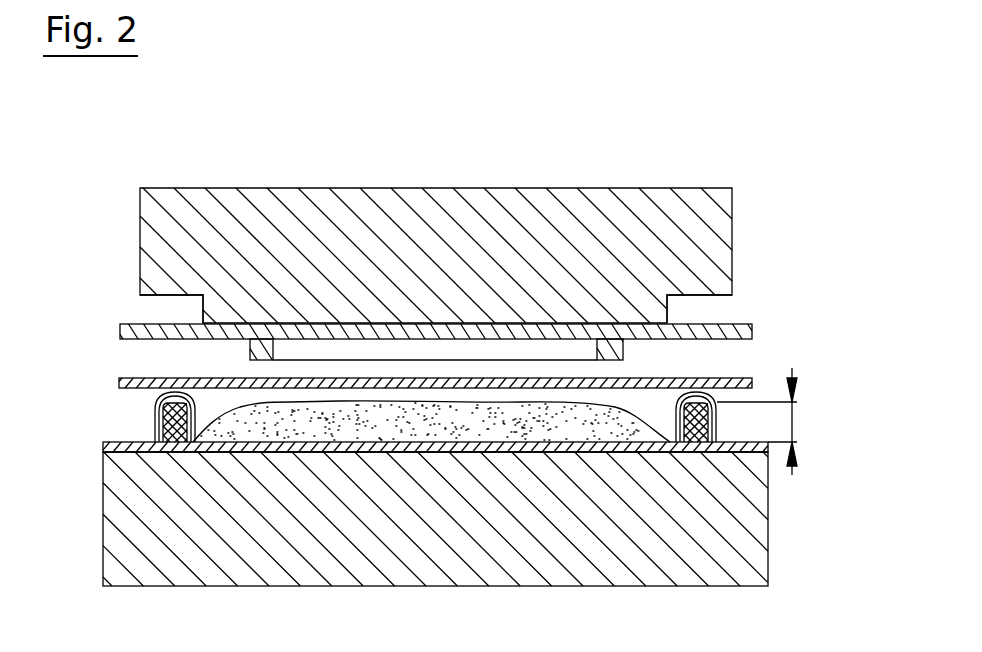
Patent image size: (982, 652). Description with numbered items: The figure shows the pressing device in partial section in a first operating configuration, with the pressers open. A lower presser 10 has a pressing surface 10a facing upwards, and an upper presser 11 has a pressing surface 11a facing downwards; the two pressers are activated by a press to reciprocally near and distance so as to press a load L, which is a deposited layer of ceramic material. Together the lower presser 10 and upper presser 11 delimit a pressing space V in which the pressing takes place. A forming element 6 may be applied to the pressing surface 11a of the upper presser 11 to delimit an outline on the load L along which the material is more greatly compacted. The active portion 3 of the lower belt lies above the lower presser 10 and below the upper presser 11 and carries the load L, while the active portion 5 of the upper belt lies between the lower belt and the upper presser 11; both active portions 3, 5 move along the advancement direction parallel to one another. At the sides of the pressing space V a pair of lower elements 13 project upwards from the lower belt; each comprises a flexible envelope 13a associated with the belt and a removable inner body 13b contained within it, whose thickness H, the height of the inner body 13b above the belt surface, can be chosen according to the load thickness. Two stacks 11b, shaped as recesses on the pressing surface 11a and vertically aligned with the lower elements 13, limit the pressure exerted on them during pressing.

The active portion of the lower belt 3 is at (103, 444).
The active portion of the upper belt 5 is at (118, 378).
The forming element 6 is at (608, 344).
The lower presser 10 is at (545, 518).
The pressing surface of the lower presser 10a is at (387, 448).
The upper presser 11 is at (428, 238).
The pressing surface of the upper presser 11a is at (249, 338).
The stacks 11b is at (160, 296).
The lower elements 13 is at (431, 483).
The envelope 13a is at (154, 433).
The inner body 13b is at (165, 443).
The load L is at (447, 432).
The pressing space V is at (210, 361).
The thickness H is at (766, 421).